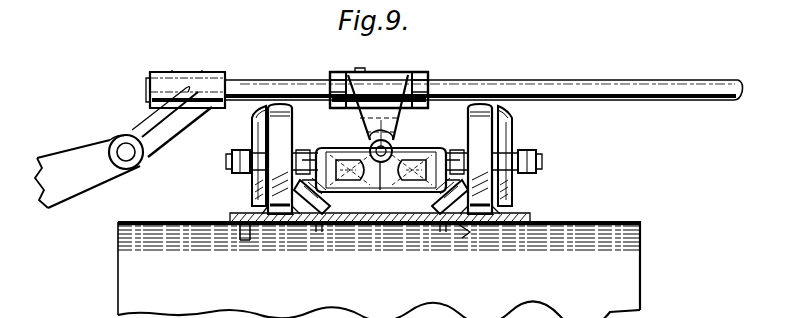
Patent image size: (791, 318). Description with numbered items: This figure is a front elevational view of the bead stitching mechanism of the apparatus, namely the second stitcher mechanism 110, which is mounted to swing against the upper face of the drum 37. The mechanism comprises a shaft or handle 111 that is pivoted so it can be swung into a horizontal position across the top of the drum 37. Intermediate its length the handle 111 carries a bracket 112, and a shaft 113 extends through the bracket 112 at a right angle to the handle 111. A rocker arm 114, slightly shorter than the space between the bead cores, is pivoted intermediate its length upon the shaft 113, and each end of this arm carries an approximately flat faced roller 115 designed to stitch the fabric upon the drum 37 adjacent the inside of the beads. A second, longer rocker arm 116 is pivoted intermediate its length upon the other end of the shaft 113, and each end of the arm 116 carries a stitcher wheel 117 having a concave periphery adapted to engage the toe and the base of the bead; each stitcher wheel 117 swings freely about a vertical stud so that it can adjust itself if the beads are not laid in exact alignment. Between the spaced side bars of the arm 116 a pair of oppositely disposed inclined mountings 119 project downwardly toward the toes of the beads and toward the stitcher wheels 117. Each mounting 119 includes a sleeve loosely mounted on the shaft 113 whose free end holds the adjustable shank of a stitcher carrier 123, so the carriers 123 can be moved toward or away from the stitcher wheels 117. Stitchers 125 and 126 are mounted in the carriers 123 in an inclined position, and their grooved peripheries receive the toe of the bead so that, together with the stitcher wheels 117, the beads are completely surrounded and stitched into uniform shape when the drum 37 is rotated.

The drum 37 is at (648, 281).
The second stitcher mechanism 110 is at (352, 72).
The shaft or handle 111 is at (626, 79).
The bracket 112 is at (378, 132).
The shaft 113 is at (398, 136).
The rocker arm 114 is at (388, 192).
The flat faced roller 115 is at (281, 108).
The second rocker arm 116 is at (328, 138).
The stitcher wheel 117 is at (250, 182).
The inclined mounting 119 is at (332, 200).
The stitcher carrier 123 is at (320, 226).
The stitcher 125 is at (284, 226).
The stitcher 126 is at (466, 226).